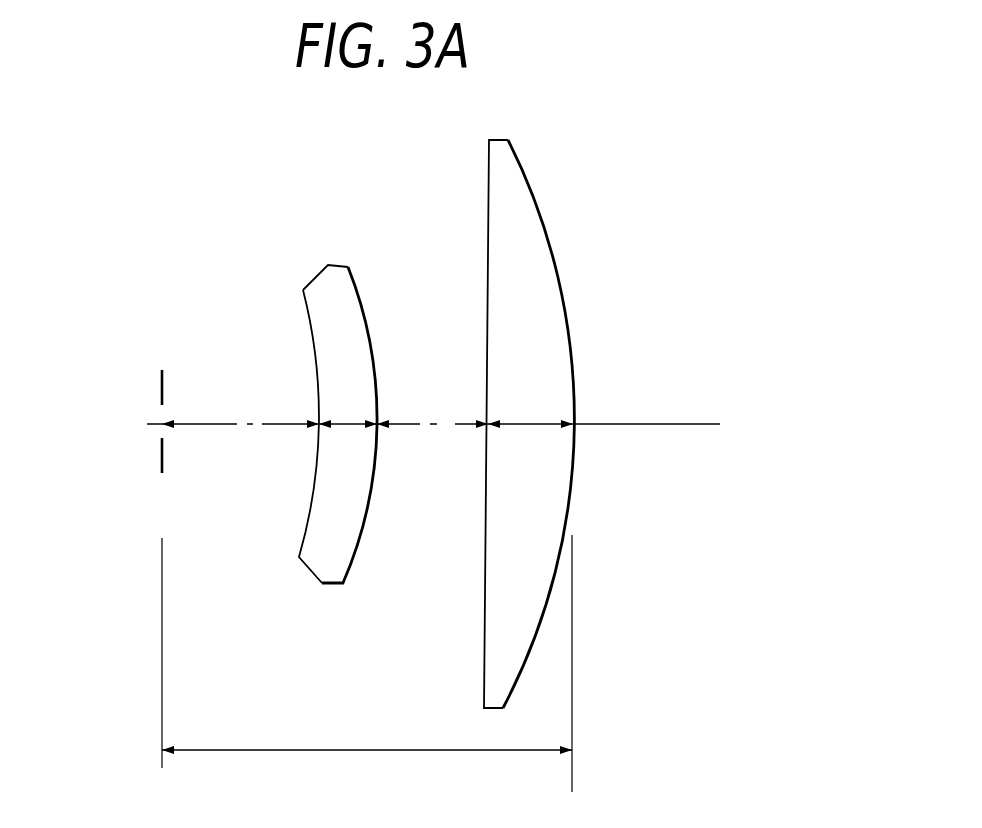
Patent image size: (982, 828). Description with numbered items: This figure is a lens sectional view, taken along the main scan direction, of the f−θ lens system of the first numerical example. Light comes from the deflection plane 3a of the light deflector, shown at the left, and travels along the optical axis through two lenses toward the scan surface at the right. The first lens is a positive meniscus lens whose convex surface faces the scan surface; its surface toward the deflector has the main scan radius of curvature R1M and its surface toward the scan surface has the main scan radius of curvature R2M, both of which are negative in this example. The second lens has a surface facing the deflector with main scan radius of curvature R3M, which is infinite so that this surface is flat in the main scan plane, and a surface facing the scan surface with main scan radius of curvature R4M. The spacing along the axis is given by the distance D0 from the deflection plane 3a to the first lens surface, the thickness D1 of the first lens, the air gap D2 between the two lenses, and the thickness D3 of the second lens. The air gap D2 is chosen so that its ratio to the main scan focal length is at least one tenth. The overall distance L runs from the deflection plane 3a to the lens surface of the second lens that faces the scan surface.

The deflection plane of the light deflector 3a is at (162, 455).
The radius of curvature of first lens surface in main scan plane R1M is at (303, 311).
The radius of curvature of second lens surface in main scan plane R2M is at (358, 300).
The radius of curvature of third lens surface in main scan plane R3M is at (489, 186).
The radius of curvature of fourth lens surface in main scan plane R4M is at (527, 171).
The distance from light deflection plane to first lens surface D0 is at (240, 409).
The thickness of first lens D1 is at (348, 409).
The air gap between first and second lenses D2 is at (432, 409).
The thickness of second lens D3 is at (530, 409).
The distance from deflection plane to last lens surface L is at (367, 663).